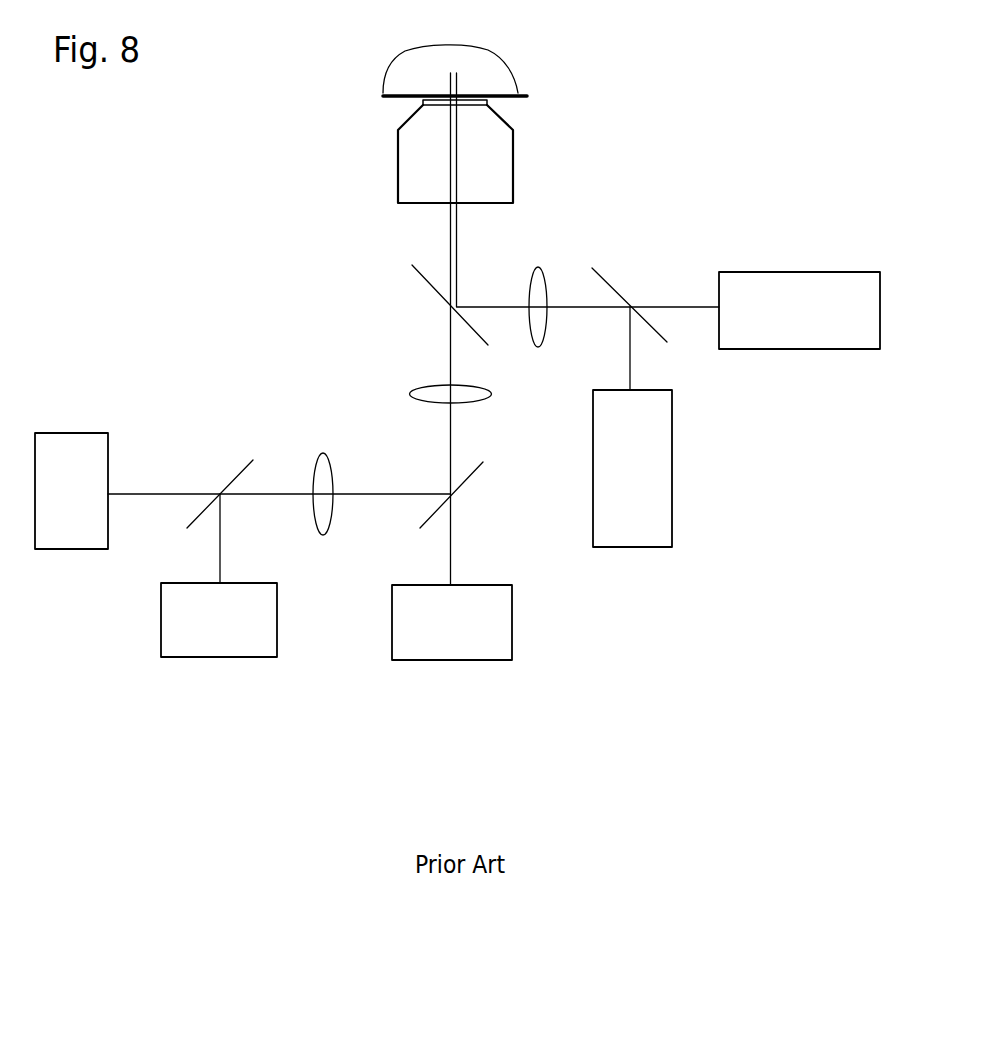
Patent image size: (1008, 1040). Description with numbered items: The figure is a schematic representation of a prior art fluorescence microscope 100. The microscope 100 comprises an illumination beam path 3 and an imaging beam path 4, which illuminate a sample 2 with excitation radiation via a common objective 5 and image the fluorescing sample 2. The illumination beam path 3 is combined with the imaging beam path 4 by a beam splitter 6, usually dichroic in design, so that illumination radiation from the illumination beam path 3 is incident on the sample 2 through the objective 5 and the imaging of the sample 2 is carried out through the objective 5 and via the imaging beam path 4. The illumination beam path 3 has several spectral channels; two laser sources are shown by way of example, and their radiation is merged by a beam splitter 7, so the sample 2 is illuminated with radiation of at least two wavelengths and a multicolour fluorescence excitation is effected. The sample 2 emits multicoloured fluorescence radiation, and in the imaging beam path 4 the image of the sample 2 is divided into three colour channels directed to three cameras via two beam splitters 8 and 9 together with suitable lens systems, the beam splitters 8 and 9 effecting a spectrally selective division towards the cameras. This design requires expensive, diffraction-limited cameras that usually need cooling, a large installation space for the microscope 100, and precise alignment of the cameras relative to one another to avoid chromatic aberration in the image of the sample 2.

The fluorescence microscope 100 is at (190, 200).
The sample 2 is at (470, 96).
The illumination beam path 3 is at (668, 180).
The imaging beam path 4 is at (282, 368).
The objective 5 is at (412, 185).
The beam splitter 6 is at (442, 296).
The beam splitter 7 is at (622, 293).
The beam splitter 8 is at (460, 487).
The beam splitter 9 is at (247, 470).